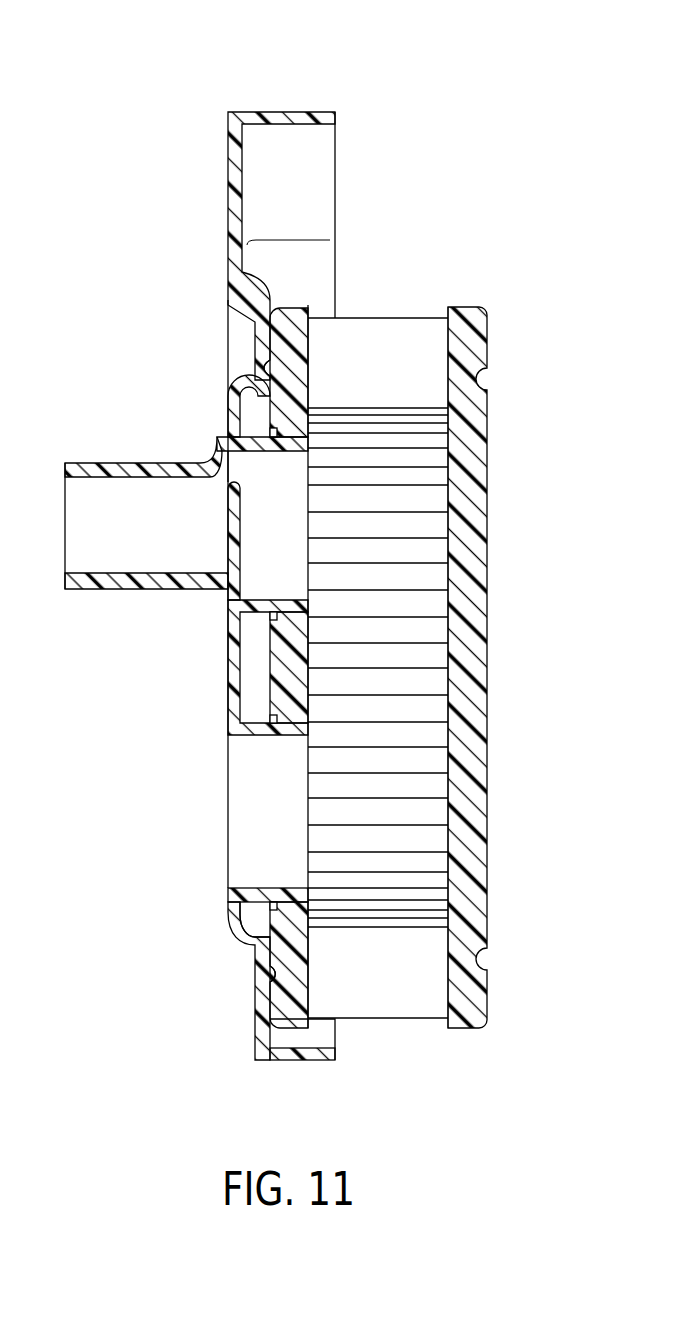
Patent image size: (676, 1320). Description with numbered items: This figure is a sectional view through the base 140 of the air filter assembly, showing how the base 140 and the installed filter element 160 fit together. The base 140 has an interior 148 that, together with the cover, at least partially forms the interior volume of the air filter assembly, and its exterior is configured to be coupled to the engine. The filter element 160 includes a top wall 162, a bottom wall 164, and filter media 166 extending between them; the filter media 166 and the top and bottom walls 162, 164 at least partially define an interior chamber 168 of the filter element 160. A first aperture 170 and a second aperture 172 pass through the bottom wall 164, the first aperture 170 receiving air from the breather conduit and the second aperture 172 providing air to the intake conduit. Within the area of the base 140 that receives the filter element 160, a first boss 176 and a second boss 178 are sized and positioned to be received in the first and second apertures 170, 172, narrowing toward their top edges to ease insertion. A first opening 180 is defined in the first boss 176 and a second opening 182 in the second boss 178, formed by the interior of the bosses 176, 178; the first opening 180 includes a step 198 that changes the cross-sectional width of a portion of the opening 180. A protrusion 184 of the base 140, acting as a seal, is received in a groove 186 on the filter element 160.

The base 140 is at (295, 83).
The interior 148 is at (308, 167).
The filter element 160 is at (503, 1026).
The top wall 162 is at (481, 712).
The bottom wall 164 is at (293, 329).
The filter media 166 is at (424, 330).
The interior chamber 168 is at (434, 576).
The first aperture 170 is at (290, 902).
The second aperture 172 is at (296, 442).
The first boss 176 is at (269, 606).
The second boss 178 is at (269, 892).
The first opening 180 is at (120, 574).
The second opening 182 is at (250, 889).
The protrusion 184 is at (268, 372).
The groove 186 is at (310, 324).
The step 198 is at (232, 524).